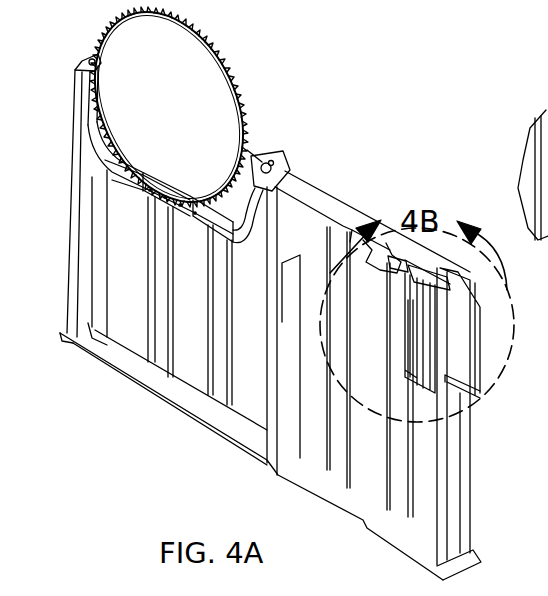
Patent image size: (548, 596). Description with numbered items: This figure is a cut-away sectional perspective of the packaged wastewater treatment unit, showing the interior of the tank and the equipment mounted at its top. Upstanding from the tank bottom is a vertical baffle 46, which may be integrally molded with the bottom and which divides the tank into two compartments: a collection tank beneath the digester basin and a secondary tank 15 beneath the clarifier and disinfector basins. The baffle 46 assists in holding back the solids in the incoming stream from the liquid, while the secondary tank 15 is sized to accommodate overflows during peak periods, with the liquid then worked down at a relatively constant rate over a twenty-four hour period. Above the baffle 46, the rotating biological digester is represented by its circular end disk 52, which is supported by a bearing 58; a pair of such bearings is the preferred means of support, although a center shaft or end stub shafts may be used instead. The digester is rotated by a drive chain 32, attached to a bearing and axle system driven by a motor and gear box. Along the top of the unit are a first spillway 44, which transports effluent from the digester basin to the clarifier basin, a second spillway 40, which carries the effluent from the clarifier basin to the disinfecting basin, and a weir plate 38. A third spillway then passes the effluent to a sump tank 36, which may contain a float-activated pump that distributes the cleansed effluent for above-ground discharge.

The end disk 52 is at (140, 62).
The drive chain 32 is at (258, 124).
The bearing 58 is at (143, 190).
The first spillway 44 is at (327, 217).
The second spillway 40 is at (393, 260).
The weir plate 38 is at (410, 262).
The sump tank 36 is at (482, 357).
The vertical baffle 46 is at (288, 422).
The secondary tank 15 is at (518, 0).